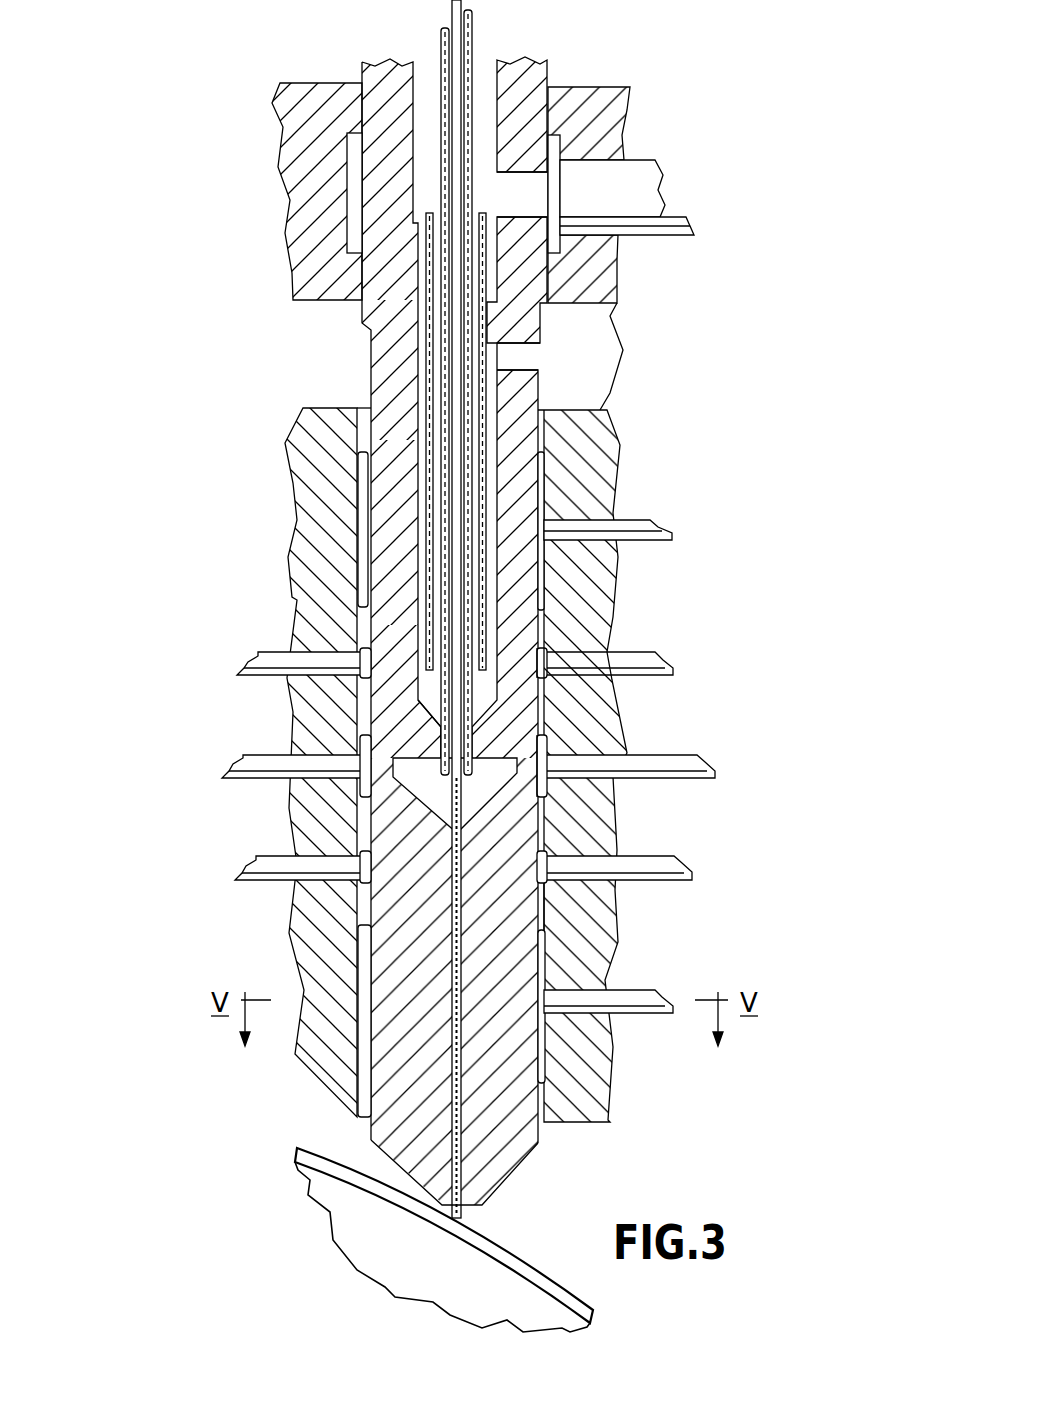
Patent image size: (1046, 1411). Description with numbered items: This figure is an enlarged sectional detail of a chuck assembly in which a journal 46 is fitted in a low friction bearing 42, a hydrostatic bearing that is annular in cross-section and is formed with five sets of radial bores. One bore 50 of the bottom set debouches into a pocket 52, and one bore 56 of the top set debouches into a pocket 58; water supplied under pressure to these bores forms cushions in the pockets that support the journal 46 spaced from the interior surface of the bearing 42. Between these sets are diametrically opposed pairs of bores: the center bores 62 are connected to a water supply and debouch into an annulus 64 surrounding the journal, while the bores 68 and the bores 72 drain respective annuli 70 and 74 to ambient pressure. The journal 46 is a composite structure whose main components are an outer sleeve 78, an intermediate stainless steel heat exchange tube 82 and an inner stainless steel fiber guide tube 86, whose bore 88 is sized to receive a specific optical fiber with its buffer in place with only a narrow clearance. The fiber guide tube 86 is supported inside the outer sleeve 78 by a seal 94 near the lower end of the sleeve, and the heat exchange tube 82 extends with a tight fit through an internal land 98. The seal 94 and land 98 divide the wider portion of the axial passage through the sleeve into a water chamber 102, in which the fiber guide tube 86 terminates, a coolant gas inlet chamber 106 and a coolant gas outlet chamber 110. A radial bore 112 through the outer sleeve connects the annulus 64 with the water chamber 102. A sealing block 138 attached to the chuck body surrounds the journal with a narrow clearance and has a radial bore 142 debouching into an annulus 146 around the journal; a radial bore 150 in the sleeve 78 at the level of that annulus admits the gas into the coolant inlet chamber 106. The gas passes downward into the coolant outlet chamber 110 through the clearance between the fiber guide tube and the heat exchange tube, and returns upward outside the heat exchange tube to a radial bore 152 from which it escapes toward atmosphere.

The low friction bearing 42 is at (583, 1128).
The journal 46 is at (498, 1190).
The bores of the bottom set 50 is at (633, 990).
The pocket 52 is at (553, 1052).
The bores of the top set 56 is at (635, 543).
The pocket 58 is at (542, 485).
The bores of the center set 62 is at (253, 777).
The annulus 64 is at (550, 747).
The bores 68 is at (260, 880).
The annulus 70 is at (570, 918).
The bores 72 is at (278, 652).
The annulus 74 is at (543, 690).
The outer sleeve 78 is at (543, 77).
The heat exchange tube 82 is at (427, 375).
The fiber guide tube 86 is at (440, 42).
The bore 88 is at (473, 32).
The seal 94 is at (422, 727).
The internal land 98 is at (528, 305).
The water chamber 102 is at (440, 798).
The coolant gas inlet chamber 106 is at (430, 100).
The coolant gas outlet chamber 110 is at (420, 480).
The radial bore 112 is at (525, 772).
The sealing block 138 is at (603, 288).
The radial bore 142 is at (642, 158).
The annulus 146 is at (560, 240).
The radial bore 150 is at (537, 197).
The radial bore 152 is at (523, 357).